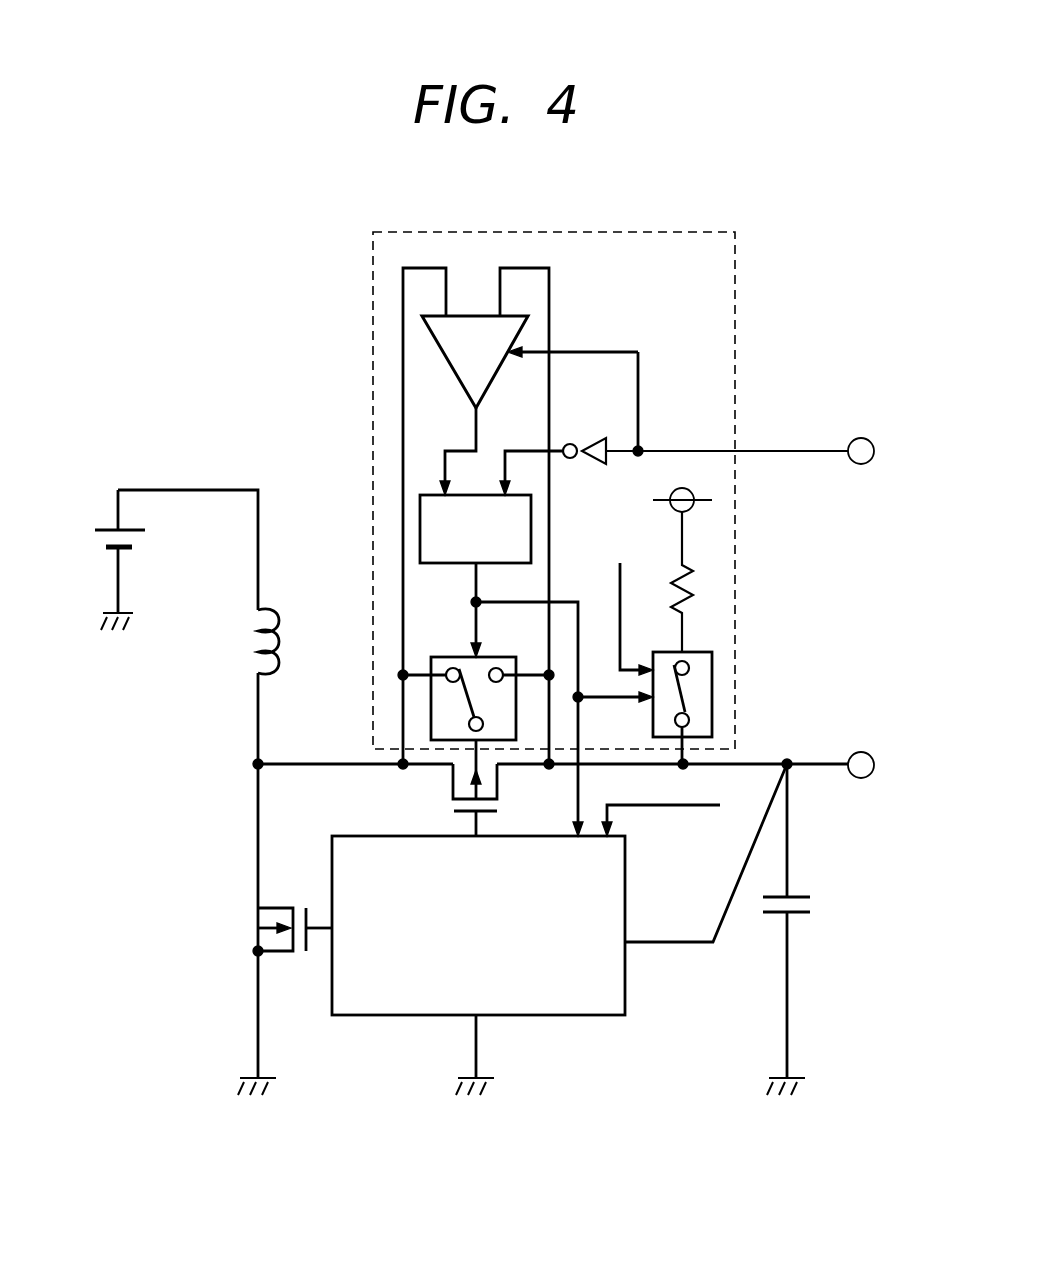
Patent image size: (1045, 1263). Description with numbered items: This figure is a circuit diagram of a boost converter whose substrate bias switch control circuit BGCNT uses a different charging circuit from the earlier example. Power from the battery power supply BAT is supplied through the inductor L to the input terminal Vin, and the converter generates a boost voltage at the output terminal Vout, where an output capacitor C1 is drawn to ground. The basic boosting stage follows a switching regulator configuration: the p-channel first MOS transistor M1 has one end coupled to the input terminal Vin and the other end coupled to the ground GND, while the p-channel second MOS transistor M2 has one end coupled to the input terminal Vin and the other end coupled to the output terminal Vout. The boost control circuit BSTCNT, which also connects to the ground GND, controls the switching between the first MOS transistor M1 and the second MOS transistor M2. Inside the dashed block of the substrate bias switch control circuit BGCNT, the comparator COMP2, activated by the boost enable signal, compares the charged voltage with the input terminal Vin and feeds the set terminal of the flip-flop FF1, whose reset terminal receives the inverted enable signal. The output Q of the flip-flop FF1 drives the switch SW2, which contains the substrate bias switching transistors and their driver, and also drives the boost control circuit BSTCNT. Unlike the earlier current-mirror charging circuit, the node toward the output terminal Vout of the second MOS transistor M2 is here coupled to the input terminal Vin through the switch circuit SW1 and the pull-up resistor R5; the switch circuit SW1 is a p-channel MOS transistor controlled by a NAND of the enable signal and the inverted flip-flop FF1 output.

The substrate bias switch control circuit BGCNT is at (735, 285).
The comparator COMP2 is at (476, 316).
The flip-flop FF1 is at (420, 530).
The switch SW2 is at (447, 657).
The pull-up resistor R5 is at (697, 587).
The switch circuit SW1 is at (712, 690).
The input terminal Vin is at (253, 762).
The output terminal Vout is at (862, 750).
The second MOS transistor M2 is at (453, 800).
The boost control circuit BSTCNT is at (559, 921).
The ground GND is at (503, 1089).
The first MOS transistor M1 is at (276, 929).
The capacitor C1 is at (807, 929).
The battery power supply BAT is at (95, 538).
The inductor L is at (238, 648).